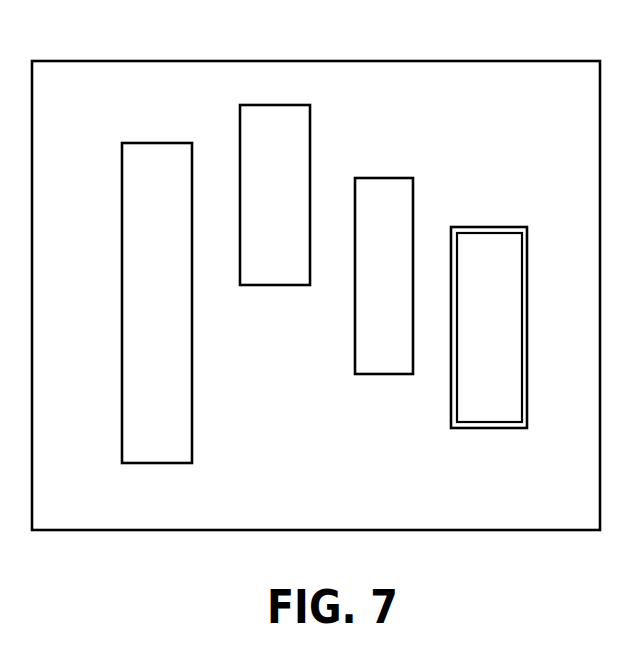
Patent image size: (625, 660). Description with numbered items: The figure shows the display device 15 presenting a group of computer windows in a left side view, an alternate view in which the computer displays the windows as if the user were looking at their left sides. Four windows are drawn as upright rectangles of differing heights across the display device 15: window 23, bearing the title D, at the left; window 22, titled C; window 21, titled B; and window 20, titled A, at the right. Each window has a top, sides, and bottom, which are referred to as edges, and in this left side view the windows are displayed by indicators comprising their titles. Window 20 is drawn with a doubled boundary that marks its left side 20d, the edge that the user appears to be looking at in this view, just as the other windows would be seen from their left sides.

The display device 15 is at (522, 61).
The window 20 is at (521, 353).
The left side 20d is at (500, 273).
The window 21 is at (375, 374).
The window 22 is at (265, 285).
The window 23 is at (140, 463).